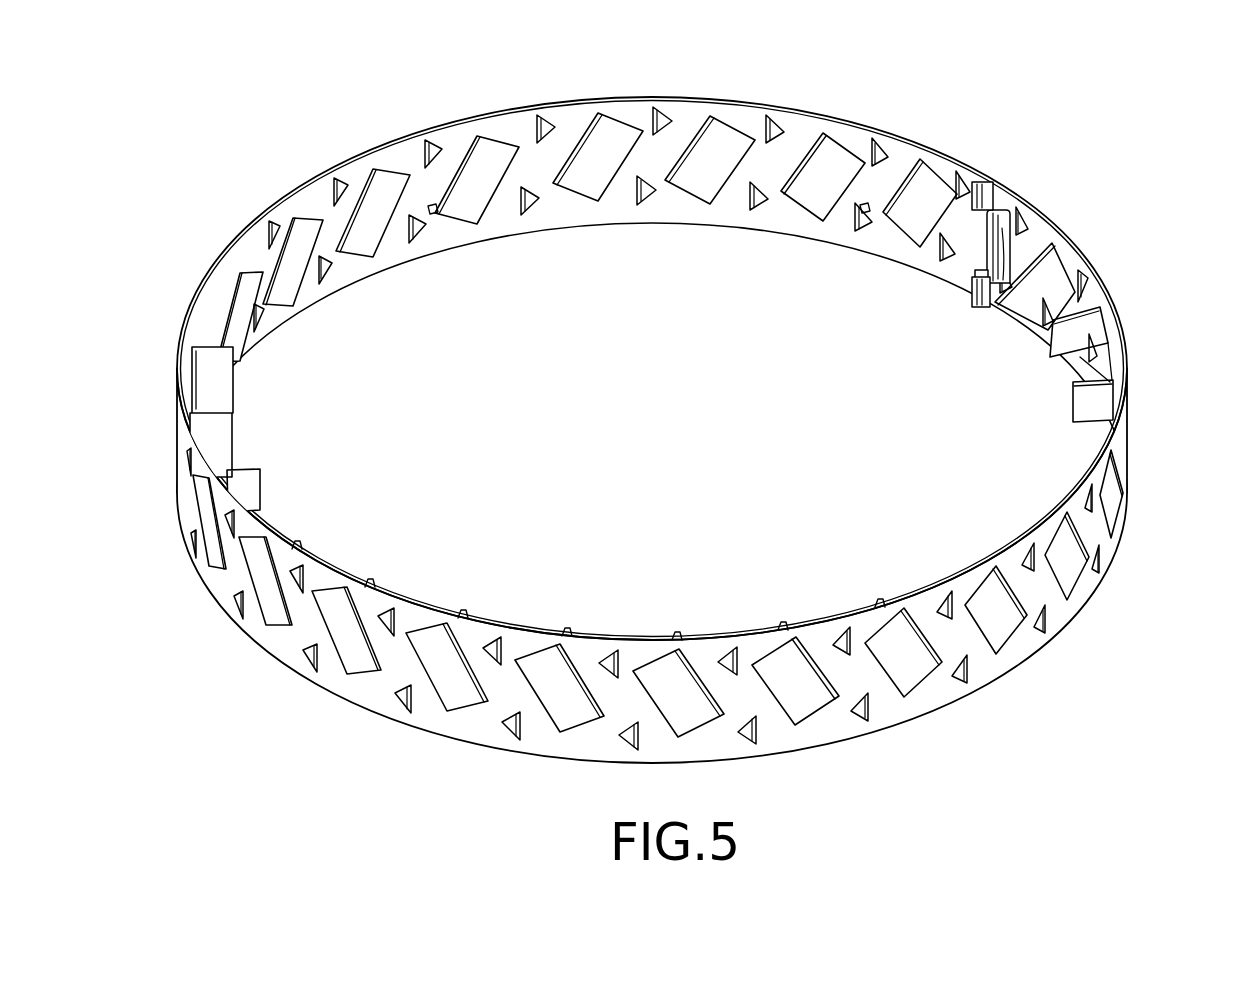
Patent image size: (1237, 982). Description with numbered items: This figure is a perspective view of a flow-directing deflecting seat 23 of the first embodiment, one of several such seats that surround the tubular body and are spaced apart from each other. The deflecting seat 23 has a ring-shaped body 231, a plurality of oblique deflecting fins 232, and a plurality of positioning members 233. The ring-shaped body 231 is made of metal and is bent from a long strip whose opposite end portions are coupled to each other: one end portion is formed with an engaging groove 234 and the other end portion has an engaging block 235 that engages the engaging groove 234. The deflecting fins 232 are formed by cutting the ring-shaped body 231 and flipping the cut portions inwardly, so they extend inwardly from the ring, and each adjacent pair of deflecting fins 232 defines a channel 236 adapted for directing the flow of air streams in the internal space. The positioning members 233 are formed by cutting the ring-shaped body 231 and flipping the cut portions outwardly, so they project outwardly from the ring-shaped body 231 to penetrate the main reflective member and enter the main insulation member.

The deflecting seat 23 is at (702, 415).
The ring-shaped body 231 is at (801, 130).
The oblique deflecting fins 232 is at (573, 140).
The positioning members 233 is at (1130, 356).
The engaging groove 234 is at (1010, 247).
The engaging block 235 is at (990, 222).
The channel 236 is at (420, 210).